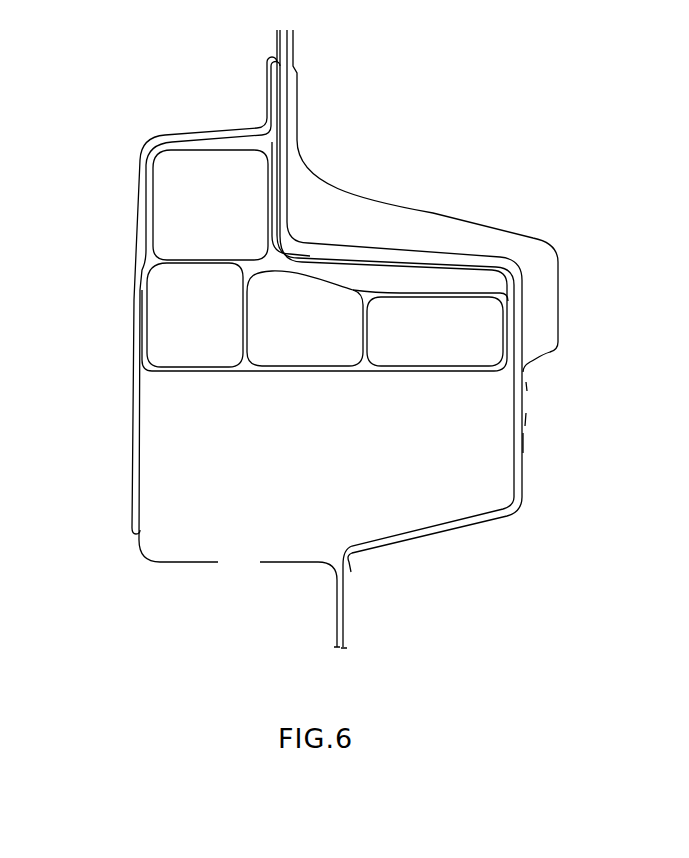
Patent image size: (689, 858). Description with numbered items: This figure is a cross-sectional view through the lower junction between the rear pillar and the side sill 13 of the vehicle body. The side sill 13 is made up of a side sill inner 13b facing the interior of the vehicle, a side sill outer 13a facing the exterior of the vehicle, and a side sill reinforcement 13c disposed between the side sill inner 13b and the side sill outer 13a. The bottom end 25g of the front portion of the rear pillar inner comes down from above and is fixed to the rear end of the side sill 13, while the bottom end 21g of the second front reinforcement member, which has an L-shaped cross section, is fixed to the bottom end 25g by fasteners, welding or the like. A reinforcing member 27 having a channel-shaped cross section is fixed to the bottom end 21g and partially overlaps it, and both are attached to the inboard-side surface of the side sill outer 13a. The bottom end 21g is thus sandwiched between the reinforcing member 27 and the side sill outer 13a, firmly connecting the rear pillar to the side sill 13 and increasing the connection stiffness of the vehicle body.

The side sill 13 is at (90, 276).
The side sill outer 13a is at (522, 468).
The side sill inner 13b is at (141, 371).
The side sill reinforcement 13c is at (307, 372).
The bottom end of the second front reinforcement member 21g is at (471, 264).
The bottom end of the front portion 25g is at (277, 47).
The reinforcing member 27 is at (514, 422).